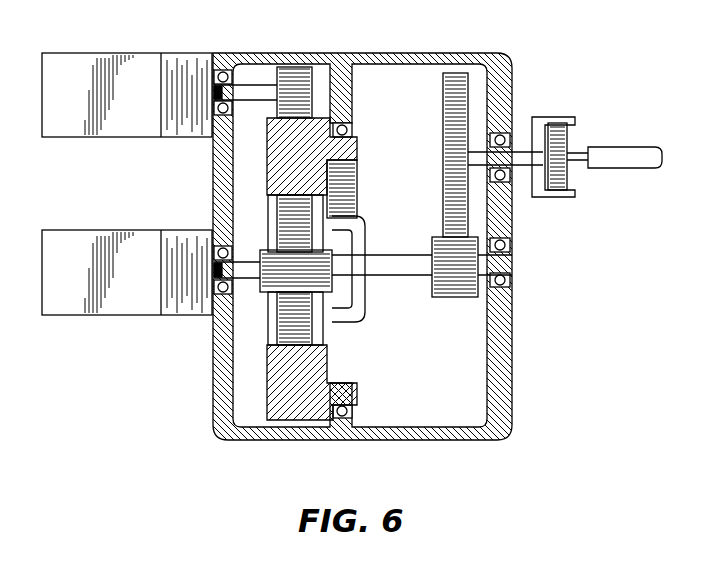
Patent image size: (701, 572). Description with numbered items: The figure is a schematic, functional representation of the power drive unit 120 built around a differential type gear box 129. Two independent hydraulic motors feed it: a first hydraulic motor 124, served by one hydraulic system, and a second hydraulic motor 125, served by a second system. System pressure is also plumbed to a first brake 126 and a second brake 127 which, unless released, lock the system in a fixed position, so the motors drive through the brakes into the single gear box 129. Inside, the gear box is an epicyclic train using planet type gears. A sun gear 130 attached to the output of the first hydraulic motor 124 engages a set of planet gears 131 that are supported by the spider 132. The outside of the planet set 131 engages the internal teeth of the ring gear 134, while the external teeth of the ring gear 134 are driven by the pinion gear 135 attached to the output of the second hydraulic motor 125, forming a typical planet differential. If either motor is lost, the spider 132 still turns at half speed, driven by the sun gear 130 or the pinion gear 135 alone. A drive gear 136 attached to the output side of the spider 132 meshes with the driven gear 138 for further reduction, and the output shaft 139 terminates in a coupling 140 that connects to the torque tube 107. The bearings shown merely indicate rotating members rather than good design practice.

The torque tube 107 is at (626, 147).
The drive unit 120 is at (205, 450).
The first hydraulic motor 124 is at (68, 315).
The second hydraulic motor 125 is at (70, 137).
The first brake 126 is at (172, 316).
The second brake 127 is at (176, 52).
The differential type gear box 129 is at (255, 440).
The sun gear 130 is at (260, 292).
The planet gears 131 is at (275, 228).
The spider 132 is at (368, 226).
The ring gear 134 is at (266, 405).
The pinion gear 135 is at (272, 108).
The drive gear 136 is at (465, 298).
The driven gear 138 is at (443, 128).
The output shaft 139 is at (521, 150).
The coupling 140 is at (572, 128).